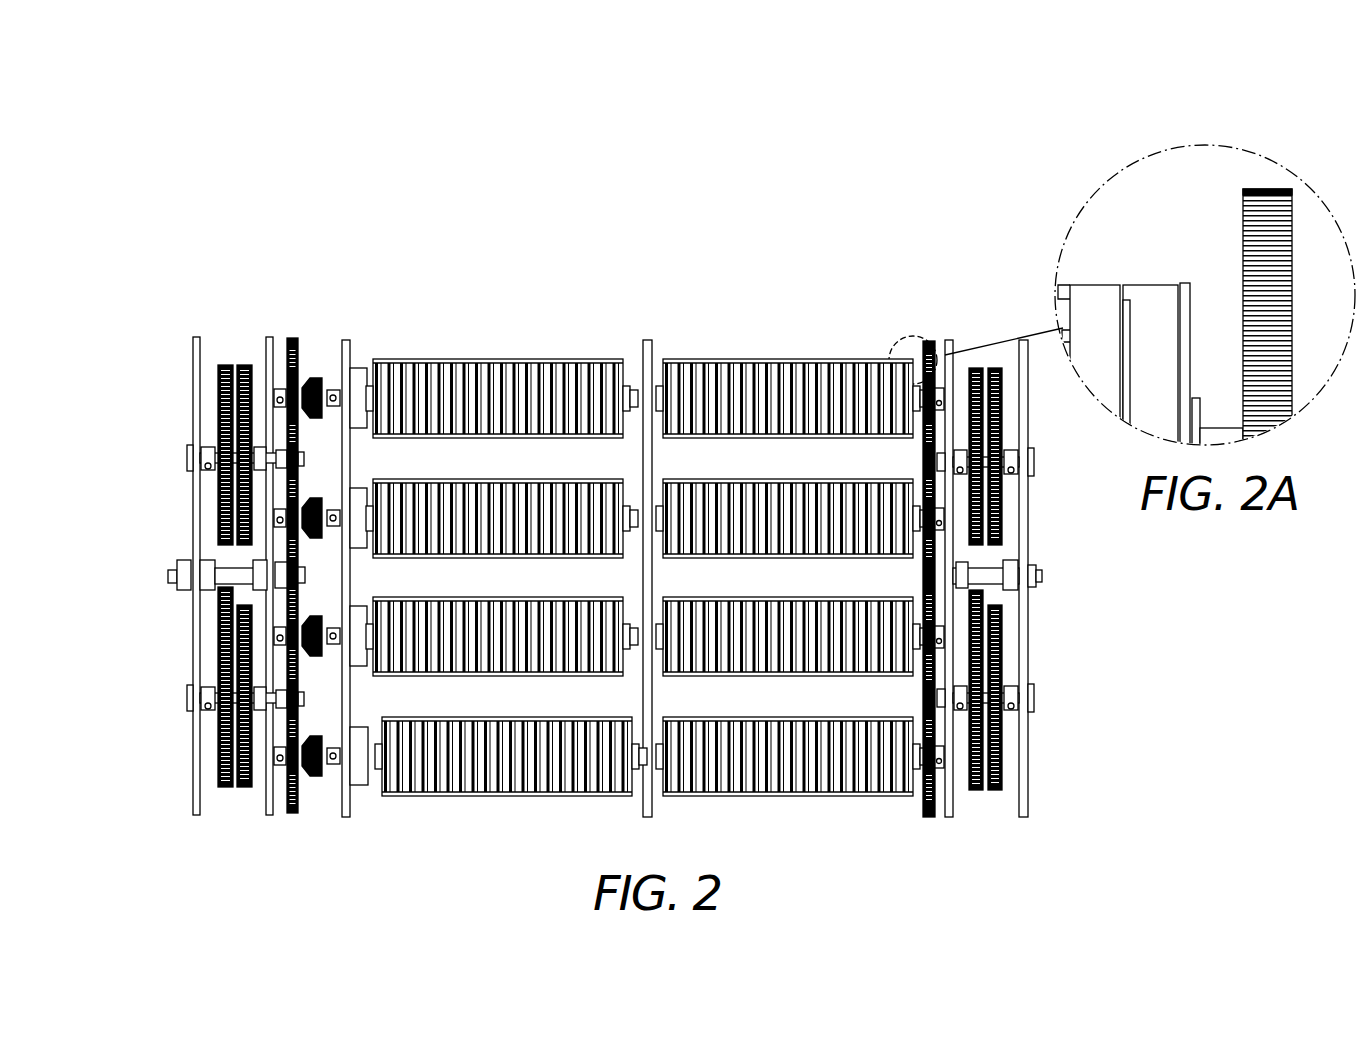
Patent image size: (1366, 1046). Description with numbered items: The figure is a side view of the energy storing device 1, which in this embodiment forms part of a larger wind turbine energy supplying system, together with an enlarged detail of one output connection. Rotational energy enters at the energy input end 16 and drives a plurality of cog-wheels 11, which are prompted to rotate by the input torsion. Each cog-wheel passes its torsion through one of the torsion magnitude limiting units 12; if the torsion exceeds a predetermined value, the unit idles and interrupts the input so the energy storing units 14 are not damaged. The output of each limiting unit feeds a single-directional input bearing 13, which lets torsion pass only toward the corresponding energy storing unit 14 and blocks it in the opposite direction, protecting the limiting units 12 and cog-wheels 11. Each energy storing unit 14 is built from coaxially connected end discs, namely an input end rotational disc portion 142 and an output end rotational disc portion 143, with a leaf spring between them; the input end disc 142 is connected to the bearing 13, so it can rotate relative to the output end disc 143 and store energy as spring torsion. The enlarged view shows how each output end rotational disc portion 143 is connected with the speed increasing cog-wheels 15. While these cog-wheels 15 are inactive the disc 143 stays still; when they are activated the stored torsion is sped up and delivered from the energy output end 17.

In FIG. 2, the energy storing device 1 is at (741, 250).
In FIG. 2, the cog-wheels 11 is at (222, 365).
In FIG. 2, the torsion magnitude limiting units 12 is at (318, 378).
In FIG. 2, the single-directional input bearings 13 is at (362, 368).
In FIG. 2, the energy storing units 14 is at (535, 300).
In FIG. 2, the input end rotational disc portions 142 is at (388, 797).
In FIG. 2, the output end rotational disc portions 143 is at (908, 797).
In FIG. 2A, the output end rotational disc portions 143 is at (1158, 292).
In FIG. 2, the speed increasing cog-wheels 15 is at (993, 790).
In FIG. 2A, the speed increasing cog-wheels 15 is at (1278, 230).
In FIG. 2, the energy input end 16 is at (172, 578).
In FIG. 2, the energy output end 17 is at (1030, 578).